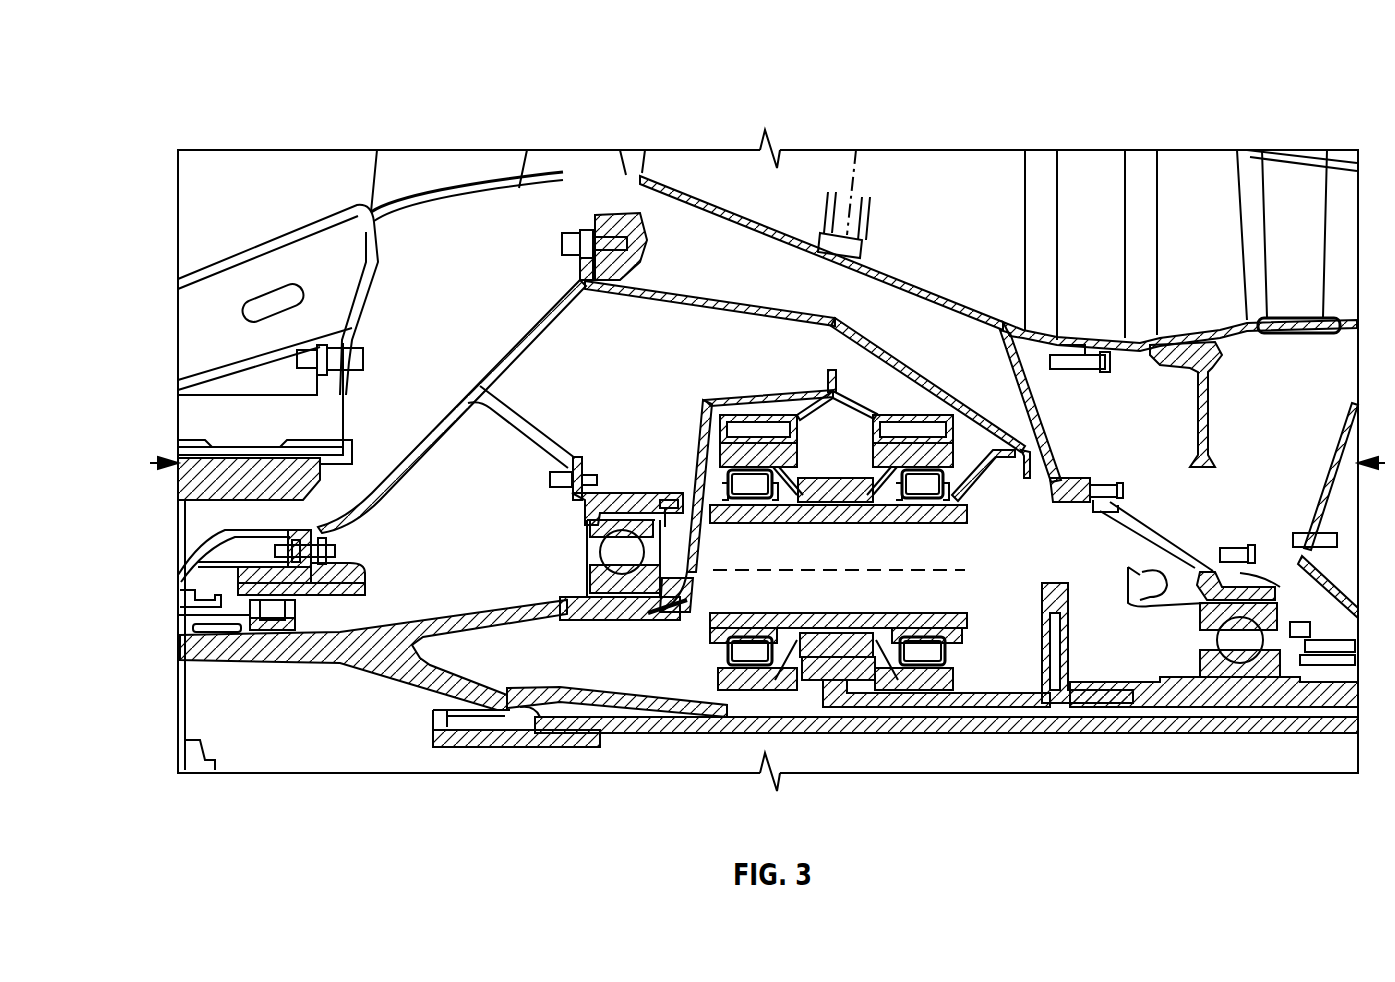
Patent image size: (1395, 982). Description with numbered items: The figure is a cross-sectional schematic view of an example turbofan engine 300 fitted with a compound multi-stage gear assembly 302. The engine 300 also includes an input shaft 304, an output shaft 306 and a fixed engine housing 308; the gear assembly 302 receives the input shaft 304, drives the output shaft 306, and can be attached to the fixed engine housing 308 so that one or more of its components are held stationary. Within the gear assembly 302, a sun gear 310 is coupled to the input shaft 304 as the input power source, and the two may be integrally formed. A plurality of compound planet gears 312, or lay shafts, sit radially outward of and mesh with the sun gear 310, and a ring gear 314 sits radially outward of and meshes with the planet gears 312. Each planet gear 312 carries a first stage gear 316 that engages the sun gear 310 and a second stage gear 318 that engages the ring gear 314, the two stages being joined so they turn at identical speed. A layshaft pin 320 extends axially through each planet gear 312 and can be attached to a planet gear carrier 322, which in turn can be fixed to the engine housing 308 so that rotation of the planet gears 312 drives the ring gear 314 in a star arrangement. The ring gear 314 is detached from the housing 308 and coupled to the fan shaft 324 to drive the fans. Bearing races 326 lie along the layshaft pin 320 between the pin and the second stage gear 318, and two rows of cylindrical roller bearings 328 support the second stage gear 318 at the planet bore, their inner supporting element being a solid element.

The engine 300 is at (142, 70).
The gear assembly 302 is at (861, 438).
The input shaft 304 is at (1048, 585).
The output shaft 306 is at (502, 622).
The fixed engine housing 308 is at (740, 298).
The sun gear 310 is at (810, 680).
The compound planet gears 312 is at (890, 634).
The ring gear 314 is at (757, 415).
The first stage gear 316 is at (836, 478).
The second stage gear 318 is at (838, 400).
The layshaft pin 320 is at (962, 517).
The planet gear carrier 322 is at (1008, 437).
The fan shaft 324 is at (700, 428).
The bearing races 326 is at (752, 488).
The bearings 328 is at (760, 497).